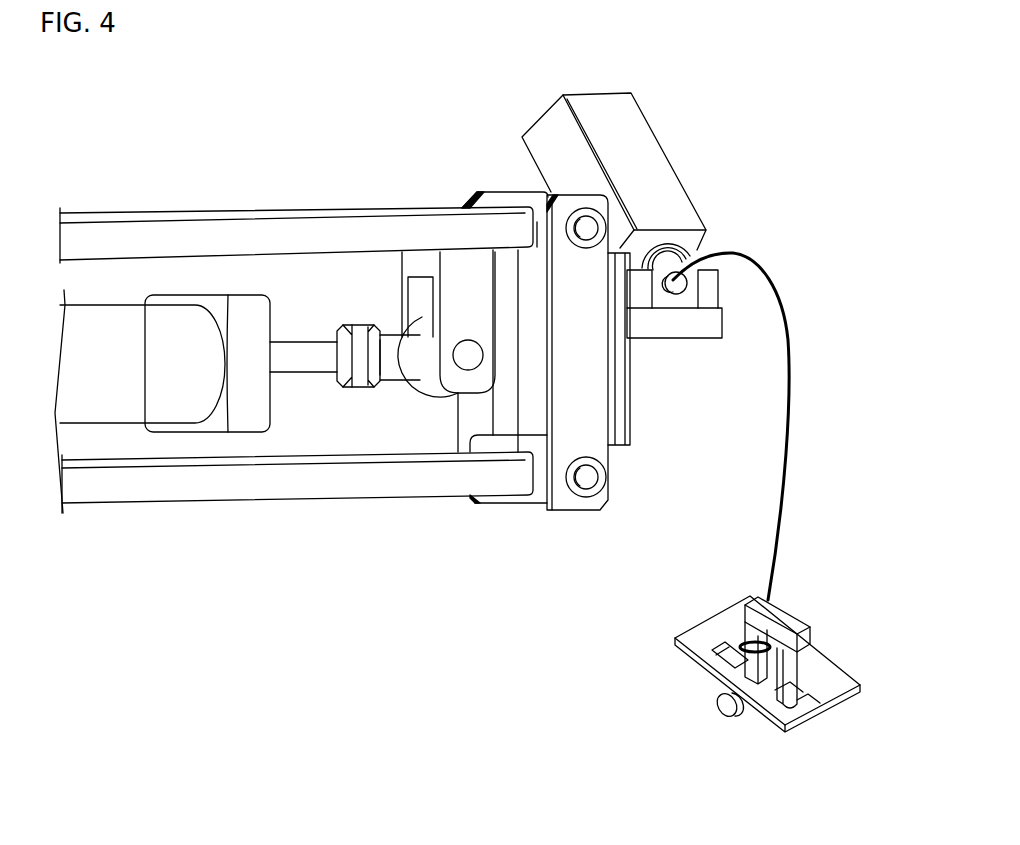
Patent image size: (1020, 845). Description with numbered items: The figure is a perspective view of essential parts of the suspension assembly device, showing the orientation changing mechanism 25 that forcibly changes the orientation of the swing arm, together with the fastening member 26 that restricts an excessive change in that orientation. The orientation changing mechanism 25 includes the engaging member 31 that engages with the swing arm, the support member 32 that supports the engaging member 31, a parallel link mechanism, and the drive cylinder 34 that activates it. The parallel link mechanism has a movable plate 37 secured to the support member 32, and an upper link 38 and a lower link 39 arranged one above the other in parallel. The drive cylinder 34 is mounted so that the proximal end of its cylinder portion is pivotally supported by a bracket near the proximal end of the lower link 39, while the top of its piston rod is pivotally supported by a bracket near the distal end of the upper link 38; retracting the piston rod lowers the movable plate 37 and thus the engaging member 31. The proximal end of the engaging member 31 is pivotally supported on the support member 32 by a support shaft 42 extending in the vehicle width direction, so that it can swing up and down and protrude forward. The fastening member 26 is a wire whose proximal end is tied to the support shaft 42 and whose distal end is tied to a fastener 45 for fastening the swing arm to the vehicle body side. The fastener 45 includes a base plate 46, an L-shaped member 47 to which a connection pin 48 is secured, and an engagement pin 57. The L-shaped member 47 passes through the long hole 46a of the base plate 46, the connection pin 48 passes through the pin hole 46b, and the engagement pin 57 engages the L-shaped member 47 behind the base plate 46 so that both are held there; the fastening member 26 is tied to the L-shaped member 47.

The orientation changing mechanism 25 is at (428, 178).
The fastening member 26 is at (795, 357).
The engaging member 31 is at (638, 142).
The support member 32 is at (705, 335).
The drive cylinder 34 is at (122, 325).
The movable plate 37 is at (533, 415).
The upper link 38 is at (246, 240).
The lower link 39 is at (220, 486).
The support shaft 42 is at (666, 302).
The fastener 45 is at (838, 656).
The base plate 46 is at (817, 685).
The long hole 46a is at (718, 670).
The pin hole 46b is at (808, 707).
The L-shaped member 47 is at (781, 613).
The connection pin 48 is at (783, 688).
The engagement pin 57 is at (715, 710).